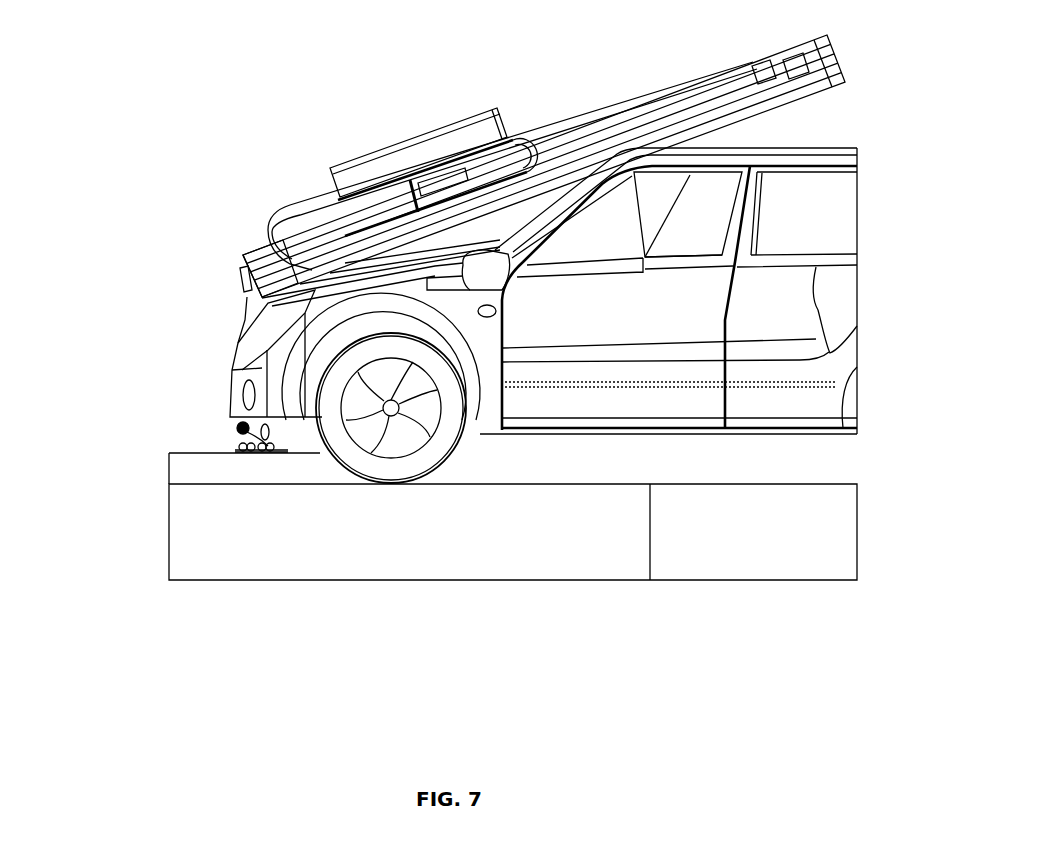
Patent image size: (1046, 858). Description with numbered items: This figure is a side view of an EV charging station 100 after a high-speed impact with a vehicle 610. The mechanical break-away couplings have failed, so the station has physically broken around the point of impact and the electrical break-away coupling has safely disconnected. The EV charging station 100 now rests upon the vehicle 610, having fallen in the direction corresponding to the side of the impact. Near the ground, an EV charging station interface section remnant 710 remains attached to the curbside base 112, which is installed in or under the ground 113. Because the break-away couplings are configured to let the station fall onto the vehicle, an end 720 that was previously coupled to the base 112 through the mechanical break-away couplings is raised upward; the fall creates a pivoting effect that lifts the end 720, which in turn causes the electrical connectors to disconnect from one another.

The EV charging station 100 is at (292, 177).
The vehicle 610 is at (798, 193).
The EV charging station interface section remnant 710 is at (235, 440).
The end 720 is at (248, 275).
The curbside base 112 is at (235, 449).
The ground 113 is at (178, 470).